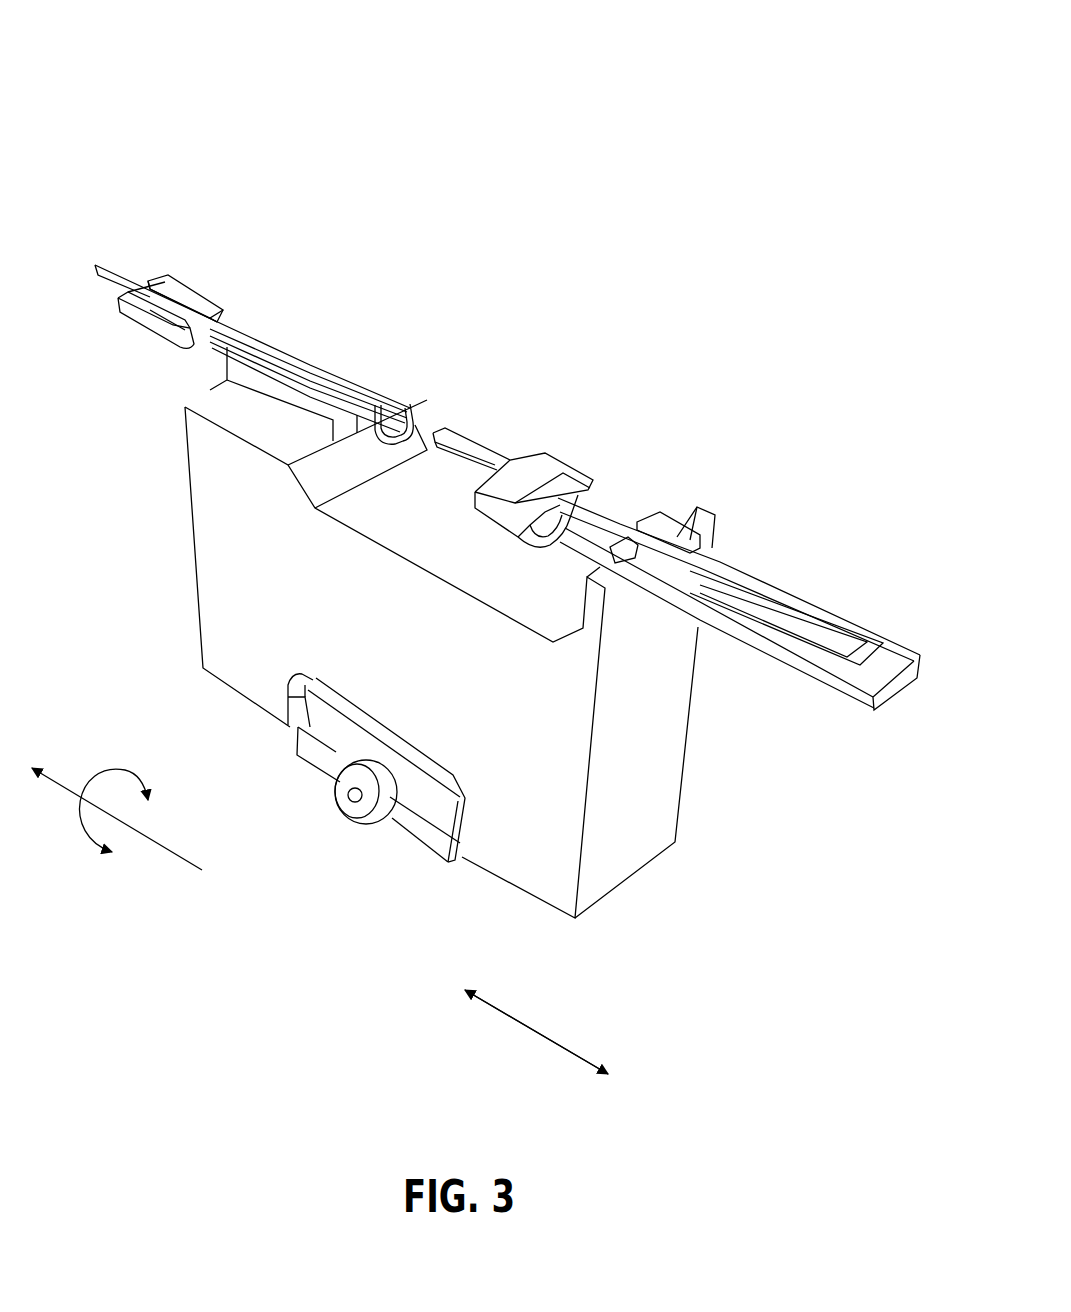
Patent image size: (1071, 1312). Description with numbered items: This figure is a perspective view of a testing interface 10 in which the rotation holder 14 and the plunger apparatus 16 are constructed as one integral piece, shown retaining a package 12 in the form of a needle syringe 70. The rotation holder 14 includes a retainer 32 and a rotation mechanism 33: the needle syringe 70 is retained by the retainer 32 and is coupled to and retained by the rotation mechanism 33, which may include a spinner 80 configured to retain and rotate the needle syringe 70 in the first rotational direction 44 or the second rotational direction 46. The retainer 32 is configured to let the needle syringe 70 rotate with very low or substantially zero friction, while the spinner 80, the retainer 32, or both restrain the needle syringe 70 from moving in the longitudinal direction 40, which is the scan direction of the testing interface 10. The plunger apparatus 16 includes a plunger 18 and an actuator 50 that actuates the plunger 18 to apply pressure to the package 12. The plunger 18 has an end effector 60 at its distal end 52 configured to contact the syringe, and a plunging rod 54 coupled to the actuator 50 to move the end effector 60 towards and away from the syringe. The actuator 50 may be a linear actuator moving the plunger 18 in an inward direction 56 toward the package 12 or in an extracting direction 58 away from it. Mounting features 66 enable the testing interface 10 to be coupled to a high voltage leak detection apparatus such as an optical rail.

The testing interface 10 is at (90, 102).
The package 12 is at (328, 356).
The rotation holder 14 is at (299, 268).
The plunger apparatus 16 is at (823, 503).
The plunger 18 is at (586, 376).
The retainer 32 is at (215, 368).
The rotation mechanism 33 is at (229, 262).
The longitudinal direction 40 is at (136, 834).
The first rotational direction 44 is at (111, 879).
The second rotational direction 46 is at (135, 810).
The actuator 50 is at (884, 608).
The distal end 52 is at (465, 432).
The plunging rod 54 is at (632, 517).
The inward direction 56 is at (513, 1014).
The extracting direction 58 is at (563, 1048).
The end effector 60 is at (581, 446).
The mounting features 66 is at (351, 832).
The needle syringe 70 is at (306, 390).
The spinner 80 is at (166, 273).